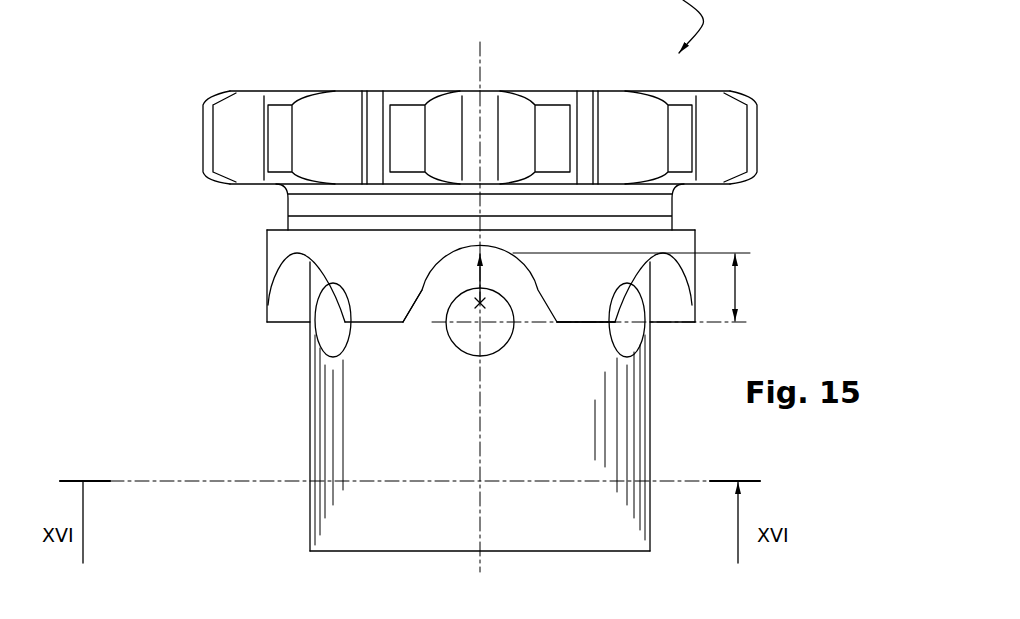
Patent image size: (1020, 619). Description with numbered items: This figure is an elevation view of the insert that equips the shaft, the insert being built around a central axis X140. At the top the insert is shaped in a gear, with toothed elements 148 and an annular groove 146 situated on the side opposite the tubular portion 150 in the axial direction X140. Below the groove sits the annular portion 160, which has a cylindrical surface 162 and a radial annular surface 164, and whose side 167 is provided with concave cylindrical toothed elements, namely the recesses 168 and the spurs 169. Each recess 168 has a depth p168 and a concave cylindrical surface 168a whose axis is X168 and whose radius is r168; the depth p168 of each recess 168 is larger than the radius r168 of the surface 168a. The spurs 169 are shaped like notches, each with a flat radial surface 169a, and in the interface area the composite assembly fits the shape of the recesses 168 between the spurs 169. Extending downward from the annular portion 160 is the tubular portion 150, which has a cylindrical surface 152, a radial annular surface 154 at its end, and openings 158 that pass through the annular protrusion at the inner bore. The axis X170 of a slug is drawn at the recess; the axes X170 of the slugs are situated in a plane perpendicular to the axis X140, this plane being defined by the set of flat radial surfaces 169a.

The toothed elements 148 is at (759, 136).
The annular groove 146 is at (678, 210).
The annular portion 160 is at (367, 272).
The radial annular surface 164 is at (263, 226).
The cylindrical surface 162 is at (263, 272).
The side 167 is at (401, 293).
The recess 168 is at (304, 267).
The spur 169 is at (263, 324).
The concave cylindrical surface 168a is at (424, 292).
The flat radial surface 169a is at (561, 324).
The tubular portion 150 is at (380, 421).
The cylindrical surface 152 is at (308, 518).
The radial annular surface 154 is at (340, 553).
The openings 158 is at (322, 357).
The central axis X140 is at (477, 296).
The axis of concave cylindrical surface X168 is at (470, 301).
The radius of concave cylindrical surface r168 is at (488, 300).
The depth of recess p168 is at (614, 287).
The axis of slug X170 is at (487, 326).